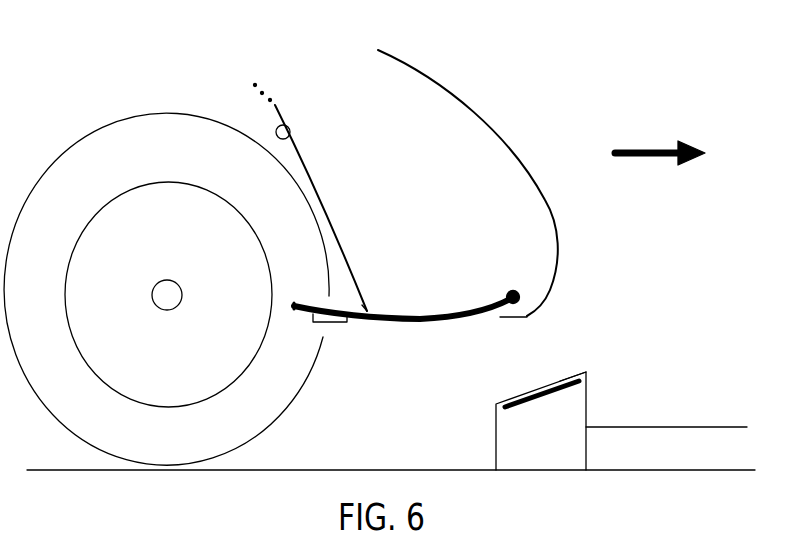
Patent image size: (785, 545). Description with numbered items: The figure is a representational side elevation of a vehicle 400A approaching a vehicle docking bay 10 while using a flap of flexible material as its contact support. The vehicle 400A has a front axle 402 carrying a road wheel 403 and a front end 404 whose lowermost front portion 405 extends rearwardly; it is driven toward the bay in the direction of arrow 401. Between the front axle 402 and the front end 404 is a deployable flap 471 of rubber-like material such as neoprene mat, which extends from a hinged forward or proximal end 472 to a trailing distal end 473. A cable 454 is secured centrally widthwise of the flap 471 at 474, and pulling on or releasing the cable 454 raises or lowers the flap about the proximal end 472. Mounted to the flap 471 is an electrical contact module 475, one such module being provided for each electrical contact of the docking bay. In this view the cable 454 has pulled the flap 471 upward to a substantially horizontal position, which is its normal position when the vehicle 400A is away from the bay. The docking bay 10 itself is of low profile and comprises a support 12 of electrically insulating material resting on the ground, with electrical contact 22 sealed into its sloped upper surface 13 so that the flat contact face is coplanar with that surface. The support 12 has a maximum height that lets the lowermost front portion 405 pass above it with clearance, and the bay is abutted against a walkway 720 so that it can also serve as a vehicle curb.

The road wheel 403 is at (163, 118).
The front axle 402 is at (166, 290).
The cable 454 is at (313, 173).
The vehicle 400A is at (485, 110).
The arrow 401 is at (647, 149).
The front end 404 is at (557, 243).
The lowermost front portion 405 is at (507, 319).
The deployable flap 471 is at (417, 327).
The proximal end 472 is at (505, 293).
The distal end 473 is at (297, 303).
The cable attachment point 474 is at (369, 310).
The electrical contact module 475 is at (338, 325).
The walkway 720 is at (643, 453).
The vehicle docking bay 10 is at (490, 435).
The electrical contact 22 is at (533, 397).
The sloped upper surface 13 is at (582, 372).
The support 12 is at (587, 393).